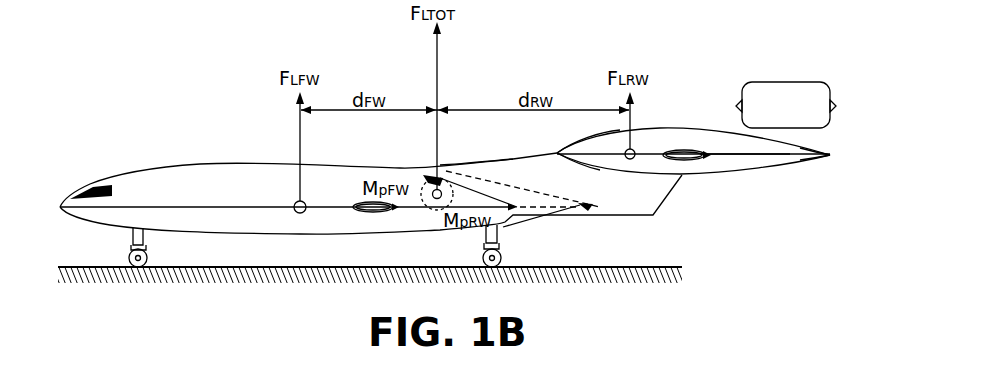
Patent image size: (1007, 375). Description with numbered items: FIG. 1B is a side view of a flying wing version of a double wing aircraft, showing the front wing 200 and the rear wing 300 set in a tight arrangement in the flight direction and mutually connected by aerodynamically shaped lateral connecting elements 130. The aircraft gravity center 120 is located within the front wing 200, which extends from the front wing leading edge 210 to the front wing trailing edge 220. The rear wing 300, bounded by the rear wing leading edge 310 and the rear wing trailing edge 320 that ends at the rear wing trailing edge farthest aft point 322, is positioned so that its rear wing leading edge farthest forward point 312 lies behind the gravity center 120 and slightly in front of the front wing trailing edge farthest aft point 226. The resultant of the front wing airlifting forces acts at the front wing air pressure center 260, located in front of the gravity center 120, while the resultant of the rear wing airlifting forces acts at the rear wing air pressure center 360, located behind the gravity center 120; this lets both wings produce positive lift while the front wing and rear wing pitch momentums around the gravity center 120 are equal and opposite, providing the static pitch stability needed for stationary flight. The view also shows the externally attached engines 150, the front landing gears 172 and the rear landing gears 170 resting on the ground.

The aircraft gravity center 120 is at (429, 175).
The lateral connecting elements 130 is at (478, 163).
The externally attached engines 150 is at (793, 100).
The rear landing gears 170 is at (503, 262).
The front landing gears 172 is at (148, 266).
The front wing 200 is at (140, 185).
The front wing leading edge 210 is at (176, 206).
The front wing trailing edge 220 is at (410, 209).
The front wing trailing edge farthest aft point 226 is at (590, 208).
The front wing air pressure center 260 is at (296, 202).
The rear wing 300 is at (697, 137).
The rear wing leading edge 310 is at (563, 139).
The rear wing leading edge farthest forward point 312 is at (556, 156).
The rear wing trailing edge 320 is at (742, 156).
The rear wing trailing edge farthest aft point 322 is at (830, 157).
The rear wing air pressure center 360 is at (634, 151).